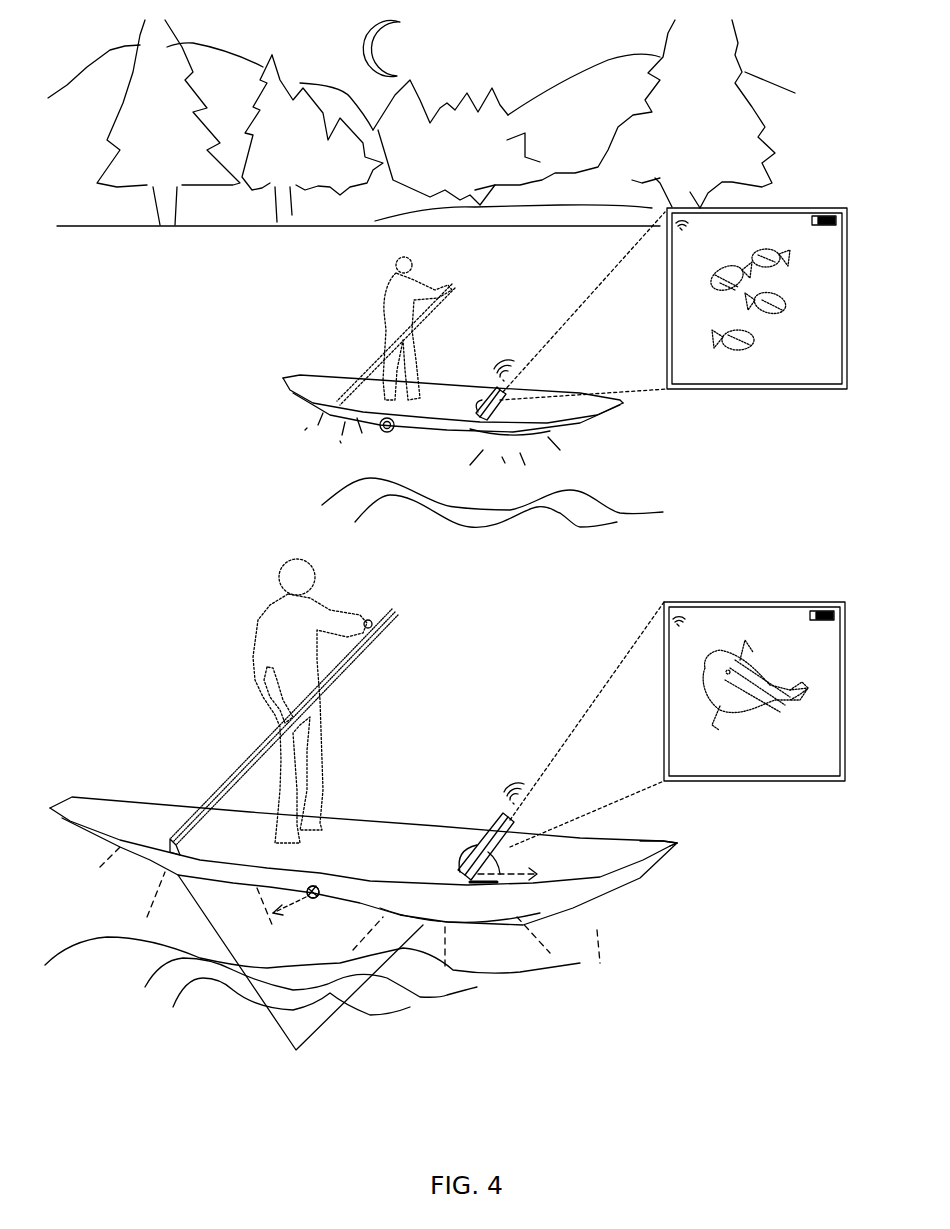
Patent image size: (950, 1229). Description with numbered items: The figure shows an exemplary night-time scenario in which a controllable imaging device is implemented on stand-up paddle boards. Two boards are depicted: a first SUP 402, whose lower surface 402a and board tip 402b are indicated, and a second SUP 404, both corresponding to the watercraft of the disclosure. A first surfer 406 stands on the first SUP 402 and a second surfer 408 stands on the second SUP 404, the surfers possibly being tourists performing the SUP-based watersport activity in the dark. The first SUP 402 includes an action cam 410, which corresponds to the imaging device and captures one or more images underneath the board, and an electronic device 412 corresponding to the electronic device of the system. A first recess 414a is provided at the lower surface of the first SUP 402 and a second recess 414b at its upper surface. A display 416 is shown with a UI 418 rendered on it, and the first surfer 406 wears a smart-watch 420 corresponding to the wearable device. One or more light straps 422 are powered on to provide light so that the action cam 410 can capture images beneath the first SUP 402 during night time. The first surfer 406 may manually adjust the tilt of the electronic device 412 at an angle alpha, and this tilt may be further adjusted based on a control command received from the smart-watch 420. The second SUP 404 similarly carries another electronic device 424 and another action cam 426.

The first SUP 402 is at (148, 800).
The bottom surface of paddle board 402a is at (573, 907).
The tip of paddle board 402b is at (653, 848).
The second SUP 404 is at (323, 377).
The first surfer 406 is at (273, 577).
The second surfer 408 is at (398, 268).
The action cam 410 is at (317, 900).
The electronic device 412 is at (487, 833).
The first recess 414a is at (316, 886).
The second recess 414b is at (462, 857).
The display 416 is at (798, 602).
The UI 418 is at (740, 623).
The smart-watch 420 is at (371, 620).
The light straps 422 is at (350, 966).
The other electronic device 424 is at (492, 393).
The other action cam 426 is at (392, 432).